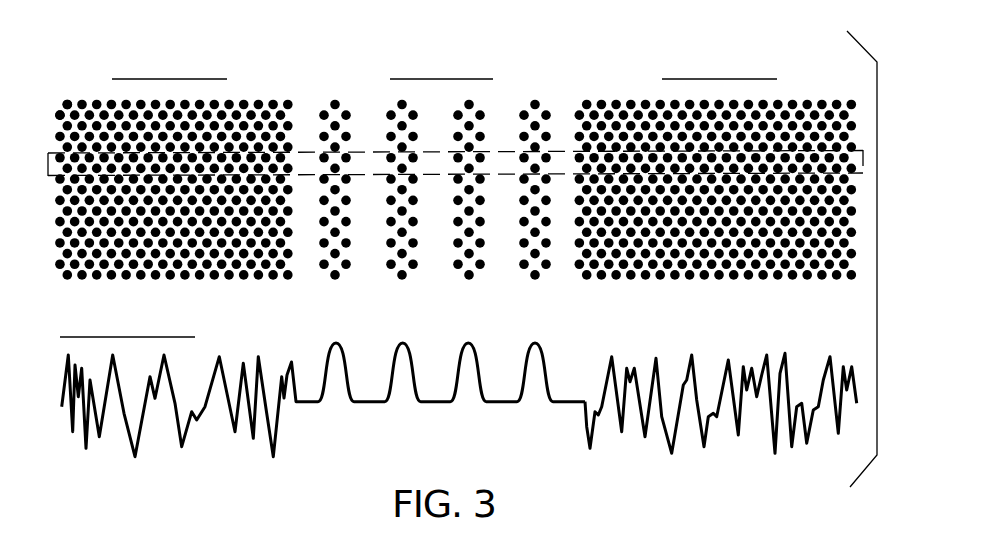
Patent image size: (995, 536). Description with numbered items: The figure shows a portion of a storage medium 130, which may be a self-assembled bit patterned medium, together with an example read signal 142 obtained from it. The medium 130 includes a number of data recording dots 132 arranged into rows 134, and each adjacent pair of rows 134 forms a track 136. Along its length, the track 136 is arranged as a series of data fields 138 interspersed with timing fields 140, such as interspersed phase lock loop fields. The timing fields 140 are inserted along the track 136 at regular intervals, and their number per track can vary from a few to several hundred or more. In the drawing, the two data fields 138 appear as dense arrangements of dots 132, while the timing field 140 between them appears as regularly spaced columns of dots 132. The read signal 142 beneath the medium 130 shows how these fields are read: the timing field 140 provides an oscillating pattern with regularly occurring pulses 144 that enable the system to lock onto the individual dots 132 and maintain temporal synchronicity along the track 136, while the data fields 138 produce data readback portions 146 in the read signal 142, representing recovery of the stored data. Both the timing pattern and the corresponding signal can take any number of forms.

The medium 130 is at (759, 26).
The data recording dots 132 is at (272, 102).
The rows 134 is at (63, 104).
The track 136 is at (304, 150).
The data fields 138 is at (164, 41).
The timing fields 140 is at (536, 80).
The read signal 142 is at (458, 383).
The pulses 144 is at (470, 343).
The data readback portions 146 is at (258, 356).